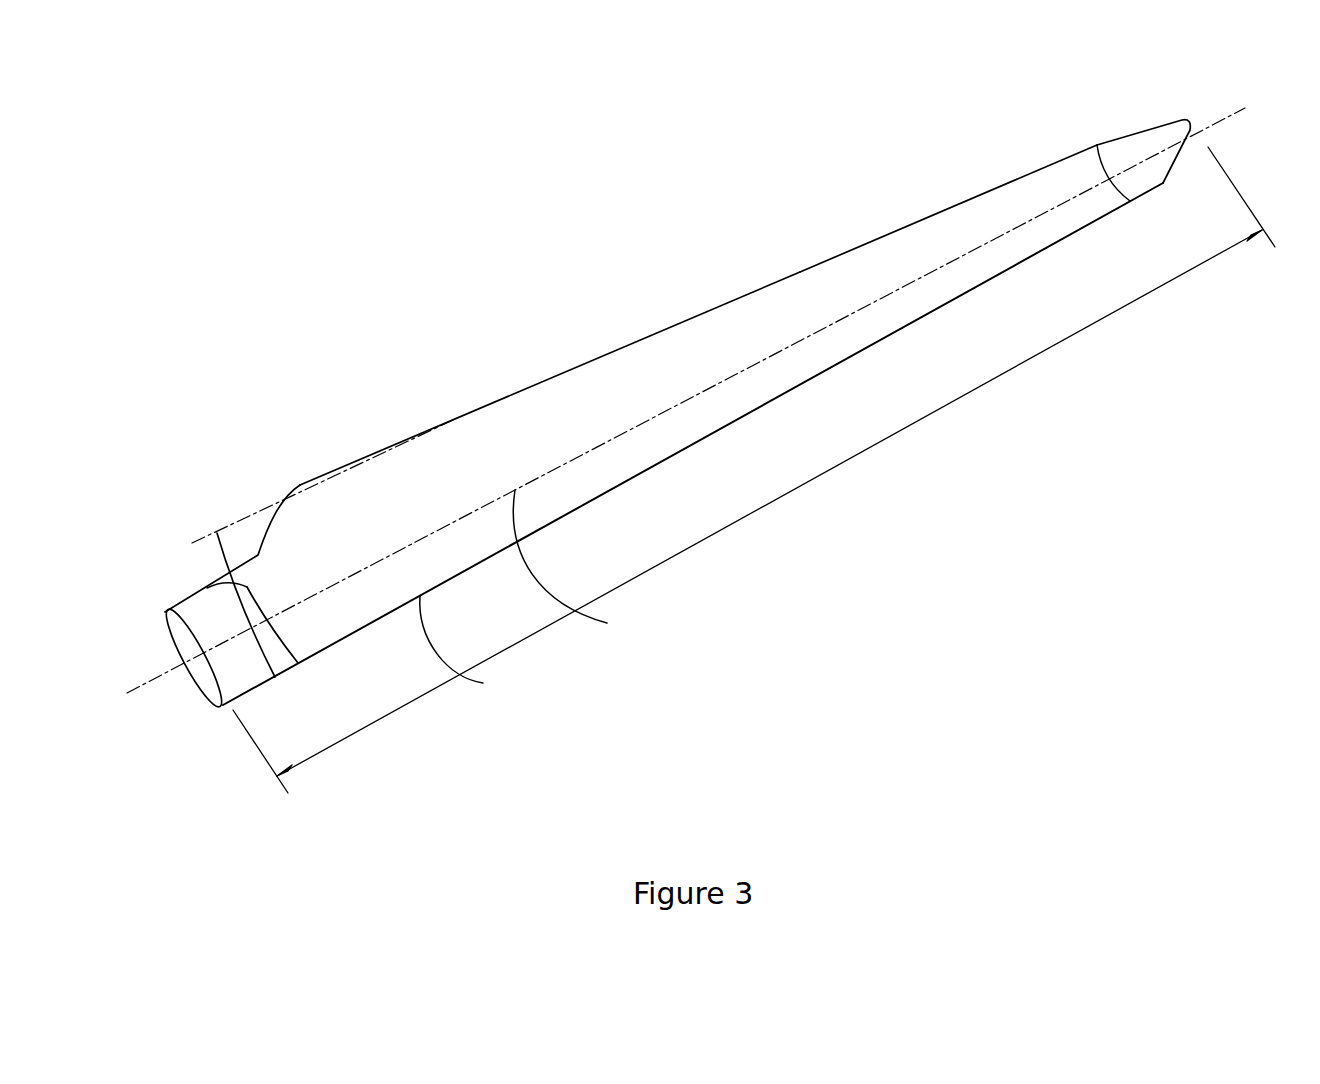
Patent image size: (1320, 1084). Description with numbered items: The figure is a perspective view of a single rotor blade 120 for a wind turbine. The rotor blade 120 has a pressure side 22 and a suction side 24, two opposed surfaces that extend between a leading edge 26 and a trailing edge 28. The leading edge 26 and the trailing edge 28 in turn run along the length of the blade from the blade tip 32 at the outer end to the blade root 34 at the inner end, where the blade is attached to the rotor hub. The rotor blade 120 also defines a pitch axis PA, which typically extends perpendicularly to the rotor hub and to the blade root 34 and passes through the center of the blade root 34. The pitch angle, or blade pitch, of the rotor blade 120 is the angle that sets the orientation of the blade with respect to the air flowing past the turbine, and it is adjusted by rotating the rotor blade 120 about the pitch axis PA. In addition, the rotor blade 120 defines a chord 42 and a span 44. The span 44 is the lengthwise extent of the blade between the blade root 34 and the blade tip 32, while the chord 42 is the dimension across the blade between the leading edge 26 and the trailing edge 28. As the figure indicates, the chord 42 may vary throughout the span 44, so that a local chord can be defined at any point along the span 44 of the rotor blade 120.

The pressure side 22 is at (640, 375).
The suction side 24 is at (361, 487).
The leading edge 26 is at (477, 650).
The trailing edge 28 is at (300, 483).
The blade tip 32 is at (1180, 130).
The blade root 34 is at (240, 660).
The chord 42 is at (207, 588).
The span 44 is at (778, 498).
The rotor blade 120 is at (850, 277).
The pitch axis PA is at (581, 568).